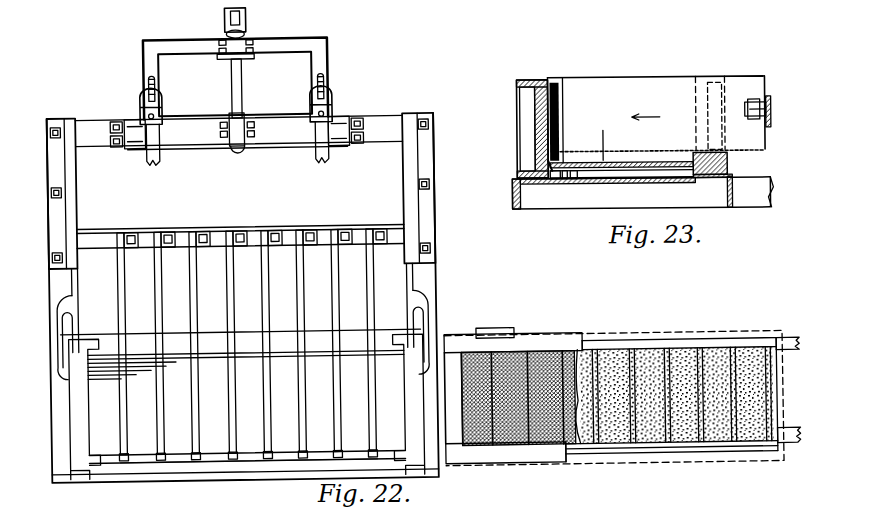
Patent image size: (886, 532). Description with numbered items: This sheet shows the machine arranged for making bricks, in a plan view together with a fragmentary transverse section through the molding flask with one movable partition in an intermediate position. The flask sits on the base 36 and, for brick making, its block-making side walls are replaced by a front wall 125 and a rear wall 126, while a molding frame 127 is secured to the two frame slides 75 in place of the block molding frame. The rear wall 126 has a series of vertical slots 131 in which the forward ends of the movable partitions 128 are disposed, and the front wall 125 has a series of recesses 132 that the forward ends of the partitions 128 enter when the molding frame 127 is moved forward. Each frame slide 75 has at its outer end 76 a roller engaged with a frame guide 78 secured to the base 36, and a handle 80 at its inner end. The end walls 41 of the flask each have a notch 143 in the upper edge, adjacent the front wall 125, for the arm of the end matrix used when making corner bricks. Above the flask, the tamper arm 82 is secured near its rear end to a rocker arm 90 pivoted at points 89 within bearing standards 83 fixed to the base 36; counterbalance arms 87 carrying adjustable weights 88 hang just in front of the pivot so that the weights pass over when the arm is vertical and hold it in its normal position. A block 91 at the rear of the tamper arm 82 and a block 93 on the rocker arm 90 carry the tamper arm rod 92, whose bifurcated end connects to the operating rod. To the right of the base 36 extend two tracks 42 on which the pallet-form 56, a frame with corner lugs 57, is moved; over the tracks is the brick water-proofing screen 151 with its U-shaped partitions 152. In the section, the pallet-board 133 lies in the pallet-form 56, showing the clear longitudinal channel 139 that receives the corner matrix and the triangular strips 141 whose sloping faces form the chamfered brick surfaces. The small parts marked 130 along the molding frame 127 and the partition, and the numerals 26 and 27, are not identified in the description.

In FIG. 22, the slat frame member 26 is at (313, 290).
In FIG. 23, the direction of movement 27 is at (603, 161).
In FIG. 22, the base 36 is at (172, 476).
In FIG. 23, the base 36 is at (515, 192).
In FIG. 22, the end wall 41 is at (78, 390).
In FIG. 22, the tracks 42 is at (790, 355).
In FIG. 22, the pallet-form 56 is at (725, 350).
In FIG. 23, the pallet-form 56 is at (548, 162).
In FIG. 23, the lugs 57 is at (555, 179).
In FIG. 22, the frame slides 75 is at (72, 285).
In FIG. 22, the outer end 76 is at (64, 174).
In FIG. 22, the frame guide 78 is at (60, 150).
In FIG. 22, the handle 80 is at (57, 335).
In FIG. 22, the tamper arm 82 is at (320, 62).
In FIG. 22, the bearing standards 83 is at (137, 116).
In FIG. 22, the counterbalance arms 87 is at (152, 80).
In FIG. 22, the adjustable weight 88 is at (160, 98).
In FIG. 22, the pivotal points 89 is at (113, 126).
In FIG. 22, the rocker arm 90 is at (212, 115).
In FIG. 22, the block 91 is at (247, 60).
In FIG. 22, the tamper arm rod 92 is at (235, 82).
In FIG. 22, the block 93 is at (233, 140).
In FIG. 22, the front wall 125 is at (236, 485).
In FIG. 23, the front wall 125 is at (532, 98).
In FIG. 22, the rear wall 126 is at (345, 345).
In FIG. 23, the rear wall 126 is at (728, 165).
In FIG. 22, the molding frame 127 is at (191, 225).
In FIG. 23, the molding frame 127 is at (772, 110).
In FIG. 22, the movable partitions 128 is at (118, 286).
In FIG. 23, the movable partitions 128 is at (690, 68).
In FIG. 22, the fastener 130 is at (175, 216).
In FIG. 23, the fastener 130 is at (772, 100).
In FIG. 22, the vertical slots 131 is at (226, 343).
In FIG. 23, the vertical slots 131 is at (718, 86).
In FIG. 22, the recesses 132 is at (156, 462).
In FIG. 23, the pallet-board 133 is at (643, 168).
In FIG. 23, the longitudinal channel 139 is at (566, 178).
In FIG. 23, the triangularly-shaped strips 141 is at (573, 179).
In FIG. 22, the notch 143 is at (68, 462).
In FIG. 23, the notch 143 is at (553, 80).
In FIG. 22, the water-proofing screen 151 is at (587, 338).
In FIG. 22, the U-shaped partitions 152 is at (540, 365).